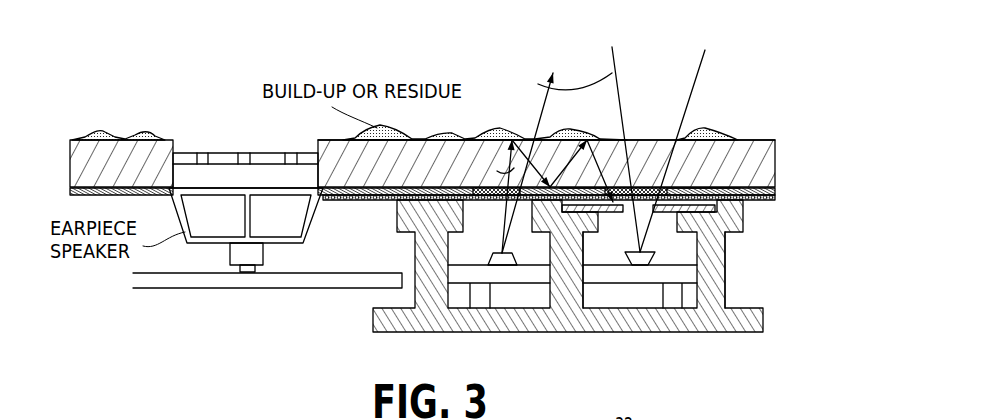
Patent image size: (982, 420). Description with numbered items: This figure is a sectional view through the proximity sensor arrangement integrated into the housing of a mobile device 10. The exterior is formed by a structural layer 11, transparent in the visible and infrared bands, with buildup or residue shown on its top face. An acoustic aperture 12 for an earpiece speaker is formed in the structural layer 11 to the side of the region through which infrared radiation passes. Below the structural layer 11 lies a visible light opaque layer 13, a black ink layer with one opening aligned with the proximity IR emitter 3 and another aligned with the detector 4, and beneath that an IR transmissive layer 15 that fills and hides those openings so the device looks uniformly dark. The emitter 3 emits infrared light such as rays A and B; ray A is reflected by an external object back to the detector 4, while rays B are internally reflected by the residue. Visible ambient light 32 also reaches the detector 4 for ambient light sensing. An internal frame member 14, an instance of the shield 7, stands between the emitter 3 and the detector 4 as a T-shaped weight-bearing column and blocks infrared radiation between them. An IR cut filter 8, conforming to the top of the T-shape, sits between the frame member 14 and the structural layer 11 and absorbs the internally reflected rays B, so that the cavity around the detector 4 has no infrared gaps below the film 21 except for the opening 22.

The mobile device 10 is at (466, 44).
The structural layer 11 is at (773, 162).
The acoustic aperture 12 is at (187, 145).
The visible light opaque layer 13 is at (447, 148).
The internal frame member 14 is at (420, 236).
The IR transmissive layer 15 is at (775, 197).
The film 21 is at (590, 187).
The opening 22 is at (637, 205).
The visible light 32 is at (701, 62).
The proximity IR emitter 3 is at (490, 261).
The detector 4 is at (626, 259).
The shield 7 is at (584, 235).
The IR cut filter 8 is at (710, 216).
The IR light ray A is at (562, 75).
The IR light ray B is at (497, 160).